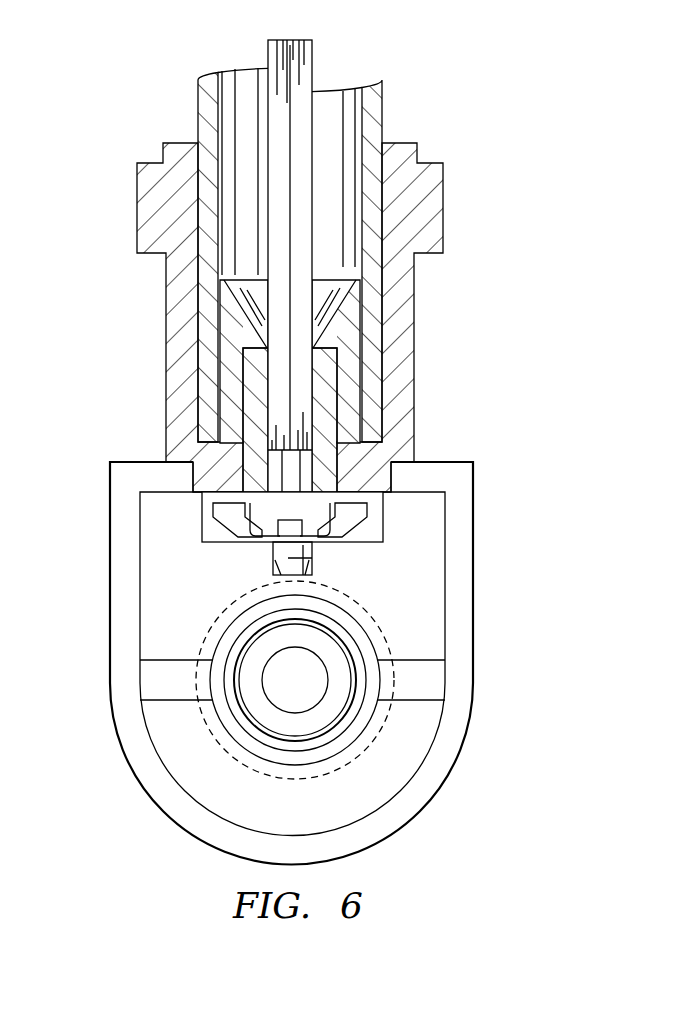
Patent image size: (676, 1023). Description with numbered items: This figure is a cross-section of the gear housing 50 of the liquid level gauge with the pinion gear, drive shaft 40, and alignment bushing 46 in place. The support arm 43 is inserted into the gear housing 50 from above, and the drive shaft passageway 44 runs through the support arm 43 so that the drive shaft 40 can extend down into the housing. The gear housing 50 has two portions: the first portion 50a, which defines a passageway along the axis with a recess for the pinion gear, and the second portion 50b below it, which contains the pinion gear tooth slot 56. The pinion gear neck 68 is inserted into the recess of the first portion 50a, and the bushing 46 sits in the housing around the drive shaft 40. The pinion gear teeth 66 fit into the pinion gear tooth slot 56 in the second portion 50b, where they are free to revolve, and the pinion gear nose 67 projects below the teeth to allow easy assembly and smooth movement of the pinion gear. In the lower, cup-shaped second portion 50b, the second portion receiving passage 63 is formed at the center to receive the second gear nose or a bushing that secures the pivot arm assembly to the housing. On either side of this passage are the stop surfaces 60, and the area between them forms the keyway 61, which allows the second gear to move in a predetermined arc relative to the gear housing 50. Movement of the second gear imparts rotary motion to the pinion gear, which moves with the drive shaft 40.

The drive shaft 40 is at (265, 47).
The support arm 43 is at (383, 110).
The drive shaft passageway 44 is at (328, 110).
The bushing 46 is at (326, 282).
The gear housing 50 is at (470, 126).
The first portion 50a is at (110, 145).
The second portion 50b is at (71, 467).
The pinion gear tooth slot 56 is at (208, 532).
The stop surfaces 60 is at (168, 687).
The keyway 61 is at (187, 632).
The second portion receiving passage 63 is at (307, 693).
The pinion gear teeth 66 is at (366, 510).
The pinion gear nose 67 is at (273, 548).
The pinion gear neck 68 is at (325, 418).